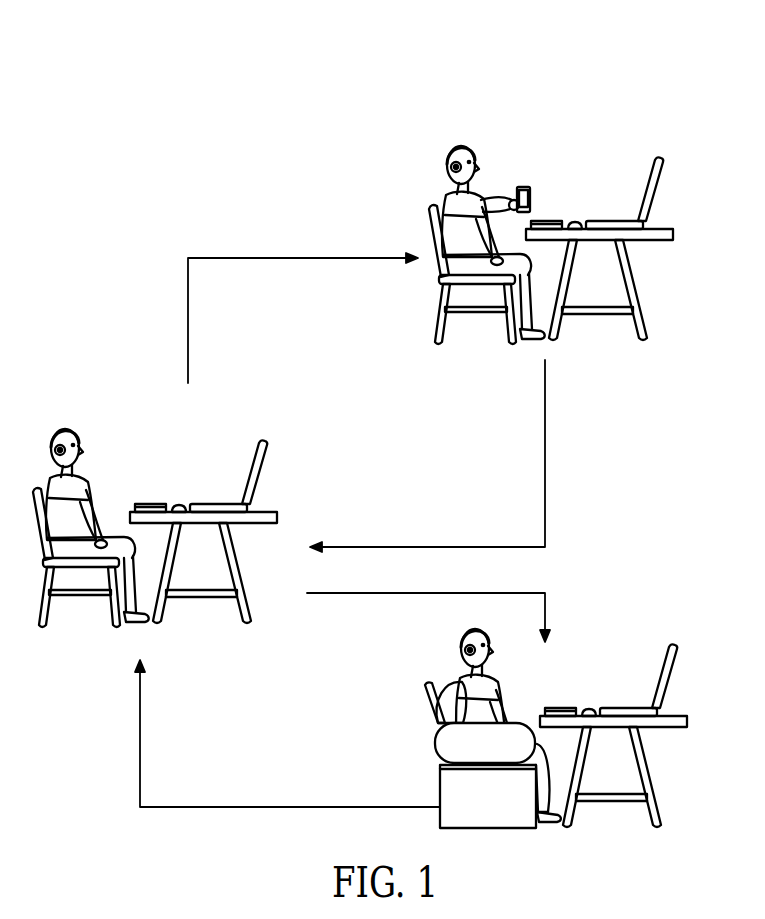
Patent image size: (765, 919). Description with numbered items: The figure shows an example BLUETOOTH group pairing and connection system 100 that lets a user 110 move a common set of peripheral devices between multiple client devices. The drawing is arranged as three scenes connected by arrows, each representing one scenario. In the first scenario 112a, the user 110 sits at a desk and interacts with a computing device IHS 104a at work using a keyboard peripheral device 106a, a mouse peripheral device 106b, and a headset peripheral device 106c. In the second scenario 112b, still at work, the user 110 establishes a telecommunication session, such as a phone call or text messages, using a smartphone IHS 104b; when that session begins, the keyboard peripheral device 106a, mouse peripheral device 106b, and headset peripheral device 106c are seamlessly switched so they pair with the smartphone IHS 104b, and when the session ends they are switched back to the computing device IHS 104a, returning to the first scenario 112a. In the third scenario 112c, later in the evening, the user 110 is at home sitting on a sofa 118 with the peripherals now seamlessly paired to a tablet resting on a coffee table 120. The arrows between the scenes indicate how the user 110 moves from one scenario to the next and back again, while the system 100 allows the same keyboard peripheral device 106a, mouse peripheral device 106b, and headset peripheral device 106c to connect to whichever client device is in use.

The BLUETOOTH group pairing and connection system 100 is at (221, 89).
The computing device IHS 104a is at (262, 463).
The smartphone IHS 104b is at (525, 185).
The keyboard peripheral device 106a is at (153, 503).
The mouse peripheral device 106b is at (182, 504).
The headset peripheral device 106c is at (64, 431).
The user 110 is at (86, 493).
The first scenario 112a is at (62, 389).
The second scenario 112b is at (579, 88).
The third scenario 112c is at (586, 579).
The sofa 118 is at (501, 756).
The coffee table 120 is at (653, 782).